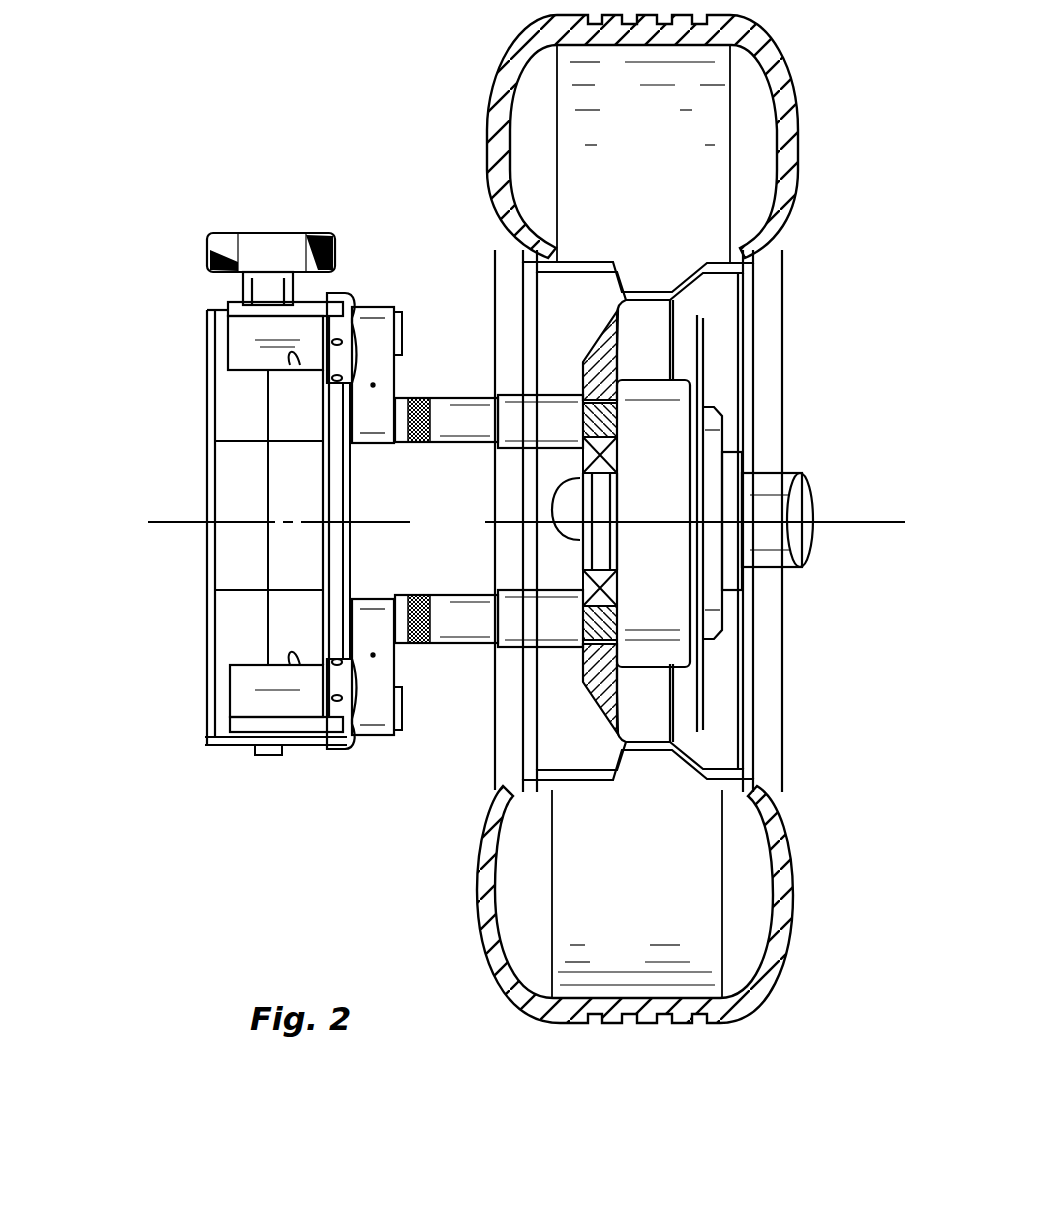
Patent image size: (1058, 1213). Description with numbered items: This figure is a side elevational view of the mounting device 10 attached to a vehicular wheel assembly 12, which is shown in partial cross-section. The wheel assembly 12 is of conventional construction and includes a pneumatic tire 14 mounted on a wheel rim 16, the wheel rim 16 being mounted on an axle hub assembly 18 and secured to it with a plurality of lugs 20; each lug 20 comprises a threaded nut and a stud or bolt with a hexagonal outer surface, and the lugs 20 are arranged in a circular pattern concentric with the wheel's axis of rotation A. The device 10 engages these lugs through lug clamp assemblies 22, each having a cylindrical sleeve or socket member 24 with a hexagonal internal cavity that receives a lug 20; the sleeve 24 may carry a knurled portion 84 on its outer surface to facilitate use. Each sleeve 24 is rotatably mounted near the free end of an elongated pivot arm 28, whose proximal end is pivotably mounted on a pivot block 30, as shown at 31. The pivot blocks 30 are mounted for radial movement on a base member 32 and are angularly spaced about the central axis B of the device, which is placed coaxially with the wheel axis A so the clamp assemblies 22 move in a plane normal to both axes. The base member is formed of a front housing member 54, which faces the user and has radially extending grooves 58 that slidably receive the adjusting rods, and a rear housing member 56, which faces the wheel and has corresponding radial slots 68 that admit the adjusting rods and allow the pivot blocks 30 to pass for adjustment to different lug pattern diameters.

The mounting device 10 is at (130, 718).
The wheel assembly 12 is at (795, 958).
The pneumatic tire 14 is at (785, 885).
The wheel rim 16 is at (775, 745).
The axle hub assembly 18 is at (712, 647).
The lugs 20 is at (605, 440).
The lug clamp assembly 22 is at (380, 446).
The sleeve or socket member 24 is at (453, 398).
The pivot arm 28 is at (396, 306).
The pivot block 30 is at (345, 293).
The pivot mounting 31 is at (403, 325).
The base member 32 is at (238, 746).
The front housing member 54 is at (225, 748).
The rear housing member 56 is at (288, 755).
The grooves 58 is at (240, 360).
The radial slots 68 is at (300, 365).
The knurled portion 84 is at (420, 443).
The axis of rotation of the wheel A is at (888, 522).
The central axis of the base member B is at (180, 522).